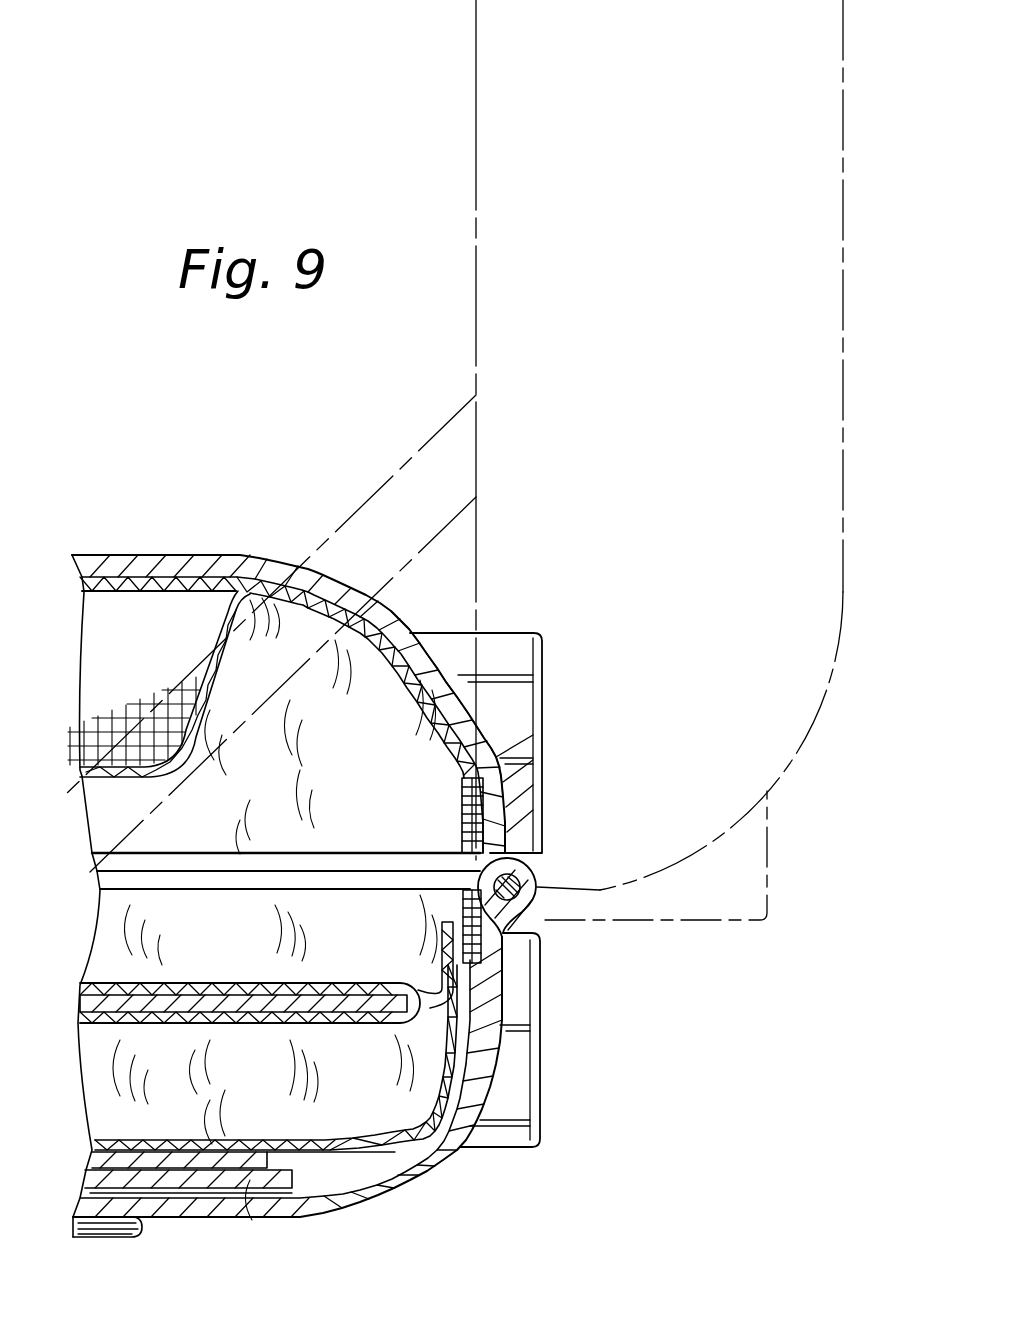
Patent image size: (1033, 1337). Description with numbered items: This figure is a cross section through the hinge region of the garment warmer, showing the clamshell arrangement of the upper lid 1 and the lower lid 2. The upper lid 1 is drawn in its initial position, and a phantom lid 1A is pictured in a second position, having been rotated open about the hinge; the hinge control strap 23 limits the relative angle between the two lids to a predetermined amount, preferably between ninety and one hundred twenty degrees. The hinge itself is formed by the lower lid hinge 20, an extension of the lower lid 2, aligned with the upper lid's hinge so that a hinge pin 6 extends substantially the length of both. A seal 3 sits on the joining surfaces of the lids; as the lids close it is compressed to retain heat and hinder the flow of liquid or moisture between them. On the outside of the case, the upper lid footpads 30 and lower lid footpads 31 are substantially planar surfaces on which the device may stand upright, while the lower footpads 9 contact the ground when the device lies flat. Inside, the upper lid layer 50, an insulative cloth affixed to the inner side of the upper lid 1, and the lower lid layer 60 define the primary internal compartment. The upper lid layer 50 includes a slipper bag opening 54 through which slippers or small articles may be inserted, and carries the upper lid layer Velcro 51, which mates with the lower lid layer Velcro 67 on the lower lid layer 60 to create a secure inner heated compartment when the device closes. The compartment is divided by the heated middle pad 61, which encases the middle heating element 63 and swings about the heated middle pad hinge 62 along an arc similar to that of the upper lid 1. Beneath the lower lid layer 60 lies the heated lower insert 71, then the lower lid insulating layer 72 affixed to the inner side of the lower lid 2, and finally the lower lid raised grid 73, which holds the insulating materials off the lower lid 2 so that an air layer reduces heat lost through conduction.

The upper lid 1 is at (140, 555).
The phantom lid 1A is at (476, 121).
The lower lid 2 is at (222, 1218).
The seal 3 is at (140, 868).
The hinge pin 6 is at (500, 912).
The lower footpads 9 is at (90, 1225).
The lower lid hinge 20 is at (540, 899).
The hinge control strap 23 is at (425, 443).
The upper lid footpads 30 is at (520, 720).
The lower lid footpads 31 is at (512, 1097).
The upper lid layer 50 is at (398, 636).
The upper lid layer Velcro 51 is at (482, 822).
The slipper bag opening 54 is at (194, 580).
The lower lid layer 60 is at (370, 1152).
The heated middle pad 61 is at (137, 977).
The heated middle pad hinge 62 is at (442, 950).
The middle heating element 63 is at (100, 1003).
The lower lid layer Velcro 67 is at (506, 937).
The heated lower insert 71 is at (100, 1160).
The lower lid insulating layer 72 is at (120, 1180).
The lower lid raised grid 73 is at (152, 1194).